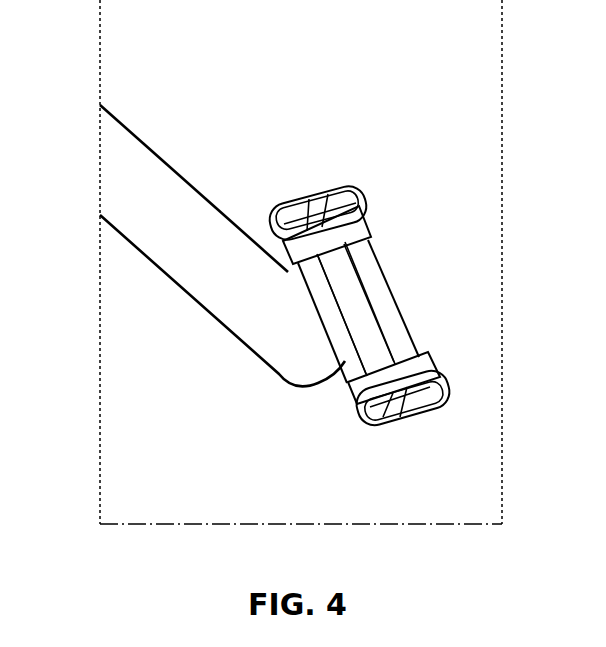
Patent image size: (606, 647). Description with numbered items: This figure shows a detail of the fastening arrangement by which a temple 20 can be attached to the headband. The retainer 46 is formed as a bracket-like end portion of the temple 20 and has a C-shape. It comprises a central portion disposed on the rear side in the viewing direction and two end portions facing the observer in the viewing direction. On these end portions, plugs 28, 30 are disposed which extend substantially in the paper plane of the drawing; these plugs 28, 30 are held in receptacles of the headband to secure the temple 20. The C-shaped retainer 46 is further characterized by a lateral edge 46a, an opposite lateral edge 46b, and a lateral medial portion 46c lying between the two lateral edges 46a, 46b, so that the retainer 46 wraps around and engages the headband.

The temple 20 is at (152, 152).
The plug 28 is at (333, 205).
The plug 30 is at (386, 425).
The retainer 46 is at (297, 313).
The lateral edge 46a is at (368, 253).
The lateral edge 46b is at (306, 308).
The lateral medial portion 46c is at (367, 322).